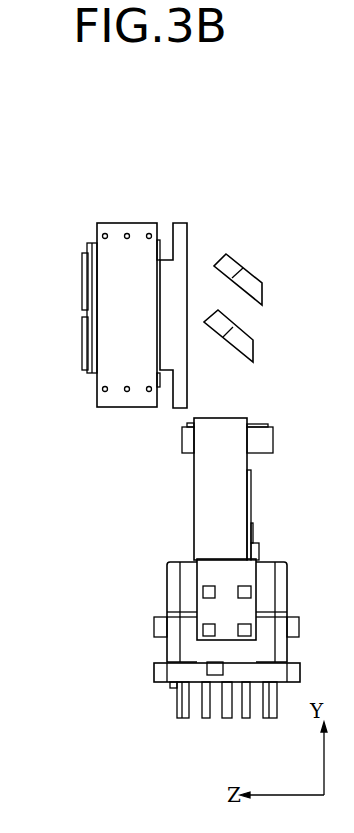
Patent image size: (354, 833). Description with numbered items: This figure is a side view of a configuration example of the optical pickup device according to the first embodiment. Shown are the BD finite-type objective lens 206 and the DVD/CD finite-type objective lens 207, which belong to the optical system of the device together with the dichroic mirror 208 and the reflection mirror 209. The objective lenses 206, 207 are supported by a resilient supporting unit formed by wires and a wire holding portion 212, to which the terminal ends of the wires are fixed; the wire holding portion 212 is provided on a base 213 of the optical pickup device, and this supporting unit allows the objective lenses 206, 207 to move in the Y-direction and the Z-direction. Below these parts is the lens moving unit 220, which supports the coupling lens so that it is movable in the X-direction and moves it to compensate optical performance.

The BD finite-type objective lens 206 is at (83, 341).
The DVD/CD finite-type objective lens 207 is at (83, 296).
The dichroic mirror 208 is at (233, 343).
The reflection mirror 209 is at (252, 282).
The wire holding portion 212 is at (112, 271).
The base 213 is at (183, 223).
The lens moving unit 220 is at (194, 497).